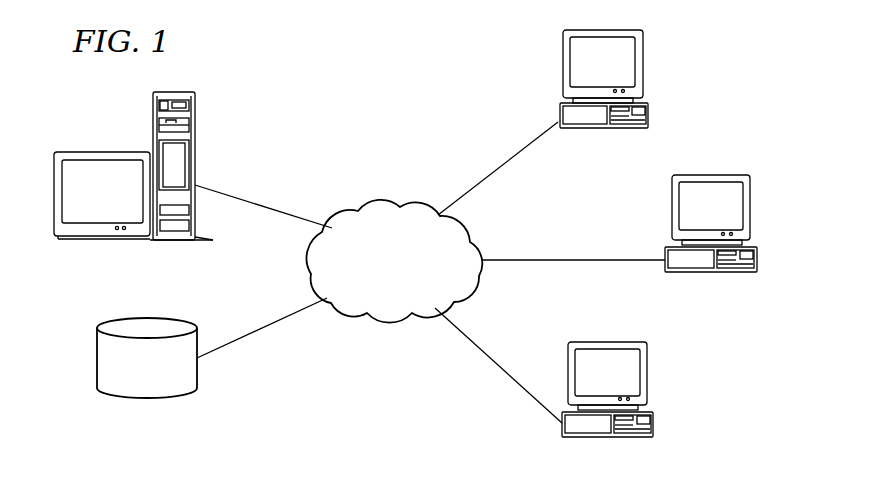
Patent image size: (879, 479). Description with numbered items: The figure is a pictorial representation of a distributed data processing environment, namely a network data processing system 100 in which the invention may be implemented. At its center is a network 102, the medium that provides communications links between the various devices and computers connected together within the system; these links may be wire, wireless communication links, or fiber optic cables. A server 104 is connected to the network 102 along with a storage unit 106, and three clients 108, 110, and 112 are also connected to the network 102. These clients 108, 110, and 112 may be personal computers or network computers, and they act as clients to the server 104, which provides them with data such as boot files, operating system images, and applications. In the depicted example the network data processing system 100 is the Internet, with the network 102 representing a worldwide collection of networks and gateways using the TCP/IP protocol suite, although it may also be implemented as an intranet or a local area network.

The network data processing system 100 is at (278, 84).
The network 102 is at (412, 288).
The server 104 is at (153, 113).
The storage unit 106 is at (97, 357).
The client 108 is at (645, 70).
The client 110 is at (752, 208).
The client 112 is at (648, 375).